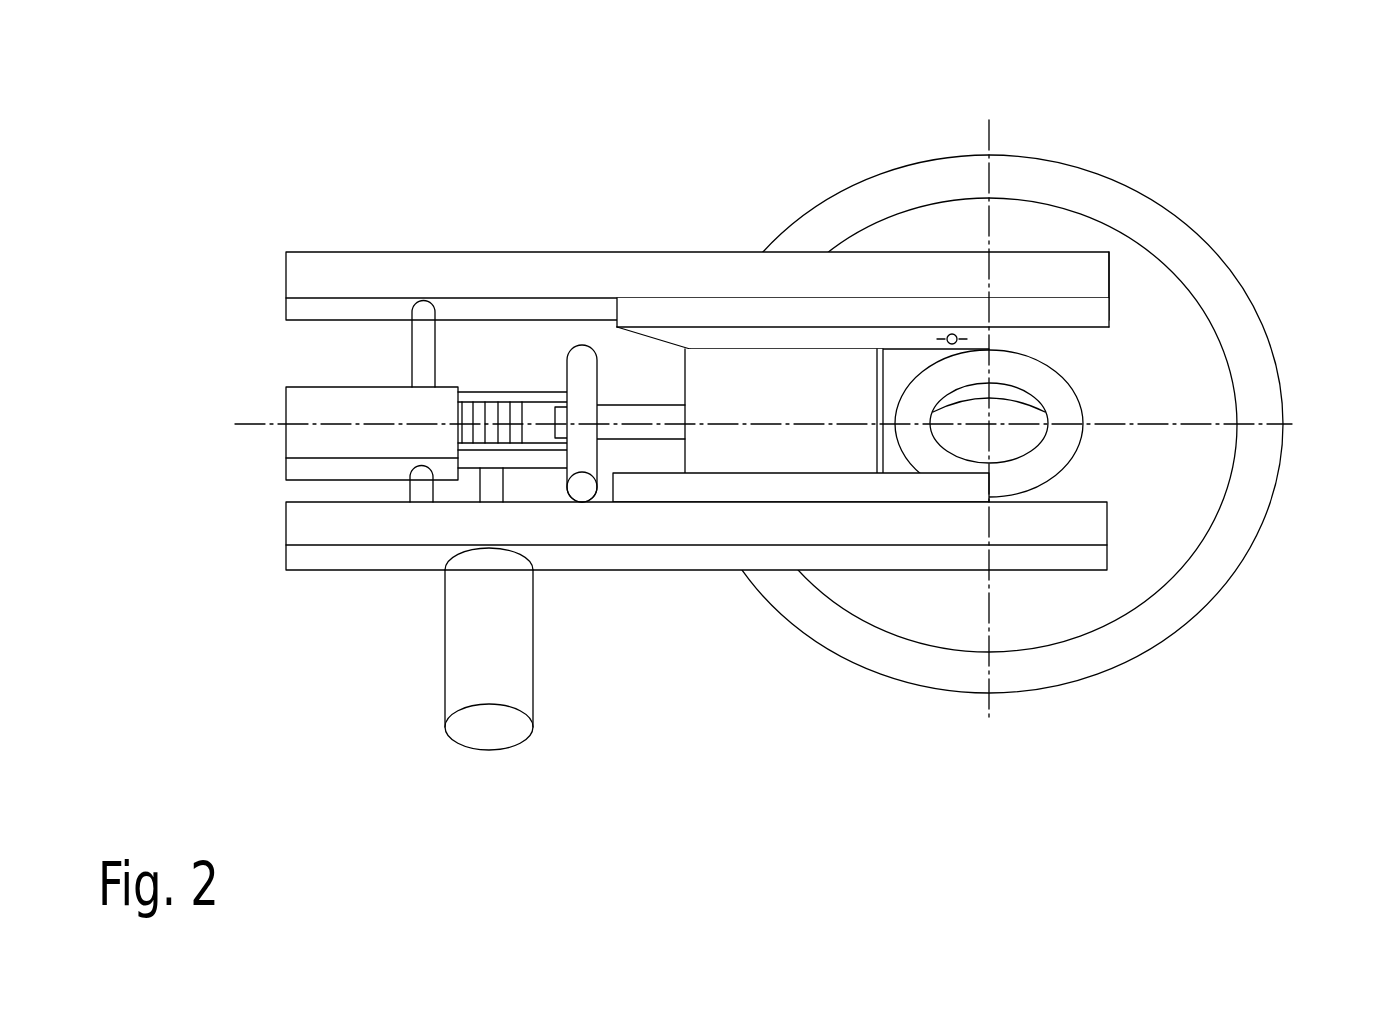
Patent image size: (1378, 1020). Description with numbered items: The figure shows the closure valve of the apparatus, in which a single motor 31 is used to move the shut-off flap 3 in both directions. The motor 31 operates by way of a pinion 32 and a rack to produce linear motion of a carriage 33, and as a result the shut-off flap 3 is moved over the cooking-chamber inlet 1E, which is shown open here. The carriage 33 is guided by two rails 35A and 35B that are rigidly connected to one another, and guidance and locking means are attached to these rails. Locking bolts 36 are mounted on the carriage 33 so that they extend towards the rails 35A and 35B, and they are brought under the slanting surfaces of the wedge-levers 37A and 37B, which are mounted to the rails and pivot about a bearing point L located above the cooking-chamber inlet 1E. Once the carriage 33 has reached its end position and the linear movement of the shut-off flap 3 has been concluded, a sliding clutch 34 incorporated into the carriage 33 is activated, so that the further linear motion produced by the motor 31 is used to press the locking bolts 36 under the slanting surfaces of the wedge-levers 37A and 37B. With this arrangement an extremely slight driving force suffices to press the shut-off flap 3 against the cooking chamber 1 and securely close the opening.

The cooking chamber 1 is at (1012, 430).
The cooking-chamber inlet 1E is at (1003, 395).
The bearing point L is at (962, 335).
The shut-off flap 3 is at (840, 377).
The motor 31 is at (488, 662).
The pinion 32 is at (492, 423).
The carriage 33 is at (236, 462).
The sliding clutch 34 is at (582, 387).
The rail 35A is at (670, 276).
The rail 35B is at (708, 525).
The locking bolts 36 is at (425, 488).
The wedge-lever 37A is at (800, 312).
The wedge-lever 37B is at (873, 488).